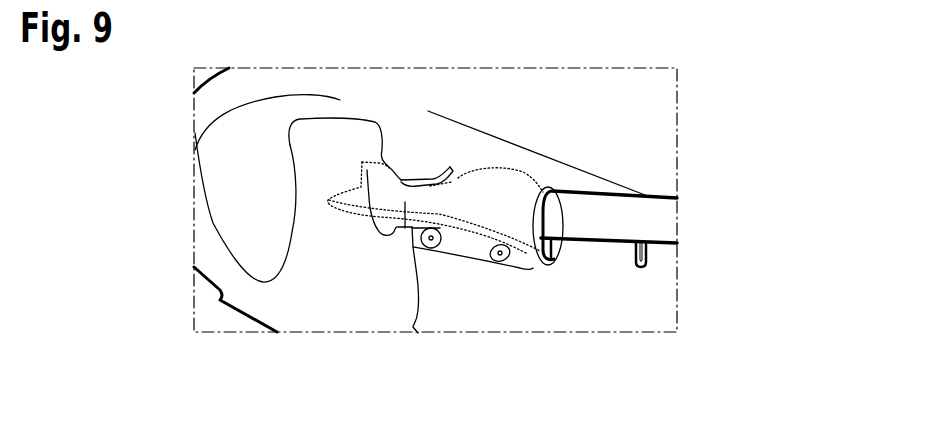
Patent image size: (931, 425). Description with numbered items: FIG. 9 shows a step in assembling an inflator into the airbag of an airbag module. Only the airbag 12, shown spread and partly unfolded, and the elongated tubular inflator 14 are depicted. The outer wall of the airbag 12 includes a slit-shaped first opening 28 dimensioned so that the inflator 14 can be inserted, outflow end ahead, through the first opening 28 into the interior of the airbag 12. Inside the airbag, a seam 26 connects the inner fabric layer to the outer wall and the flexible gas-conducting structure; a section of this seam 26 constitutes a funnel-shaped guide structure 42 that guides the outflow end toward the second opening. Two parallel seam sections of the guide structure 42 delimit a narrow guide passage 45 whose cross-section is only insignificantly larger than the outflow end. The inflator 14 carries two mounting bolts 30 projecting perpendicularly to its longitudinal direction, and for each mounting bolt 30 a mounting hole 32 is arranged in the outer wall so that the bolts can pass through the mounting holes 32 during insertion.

The airbag 12 is at (217, 135).
The inflator 14 is at (658, 221).
The seam 26 is at (345, 121).
The first opening 28 is at (547, 207).
The mounting bolt 30 is at (552, 239).
The mounting hole 32 is at (433, 240).
The guide structure 42 is at (419, 172).
The guide passage 45 is at (402, 230).